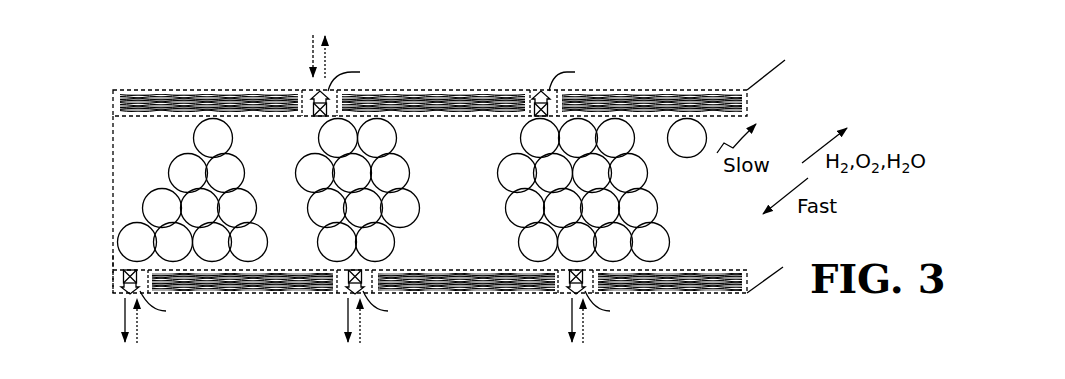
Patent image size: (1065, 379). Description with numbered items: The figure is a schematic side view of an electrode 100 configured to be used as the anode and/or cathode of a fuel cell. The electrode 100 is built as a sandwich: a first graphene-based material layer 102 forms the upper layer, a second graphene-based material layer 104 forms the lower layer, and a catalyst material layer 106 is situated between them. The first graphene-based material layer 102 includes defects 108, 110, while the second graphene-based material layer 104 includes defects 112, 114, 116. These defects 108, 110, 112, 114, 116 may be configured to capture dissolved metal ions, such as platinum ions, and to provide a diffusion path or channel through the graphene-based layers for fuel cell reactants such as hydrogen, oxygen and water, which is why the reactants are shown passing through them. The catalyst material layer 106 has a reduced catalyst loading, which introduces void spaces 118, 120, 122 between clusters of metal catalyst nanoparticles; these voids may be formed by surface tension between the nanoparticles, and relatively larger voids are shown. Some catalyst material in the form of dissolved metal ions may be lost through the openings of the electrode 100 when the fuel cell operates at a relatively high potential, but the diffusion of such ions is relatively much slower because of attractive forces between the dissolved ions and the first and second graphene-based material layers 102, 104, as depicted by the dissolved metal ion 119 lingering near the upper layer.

The electrode 100 is at (74, 274).
The first graphene-based material layer 102 is at (126, 90).
The second graphene-based material layer 104 is at (253, 294).
The catalyst material layer 106 is at (88, 192).
The defect 108 is at (310, 78).
The defect 110 is at (531, 78).
The defect 112 is at (120, 303).
The defect 114 is at (346, 304).
The defect 116 is at (567, 304).
The void space 118 is at (290, 188).
The dissolved metal ion 119 is at (702, 118).
The void space 120 is at (470, 211).
The void space 122 is at (711, 218).